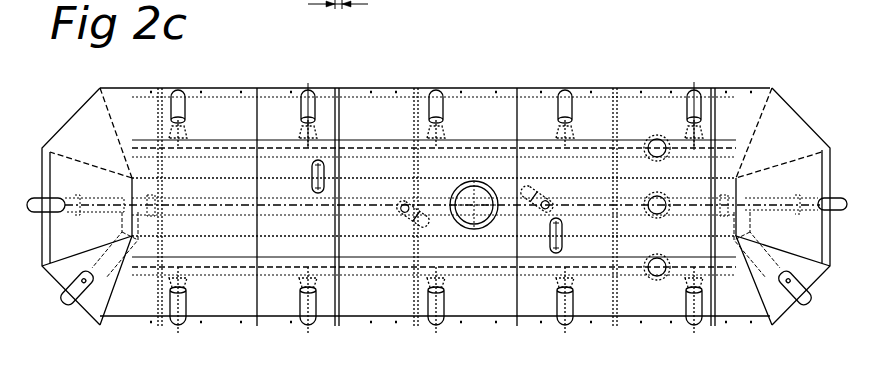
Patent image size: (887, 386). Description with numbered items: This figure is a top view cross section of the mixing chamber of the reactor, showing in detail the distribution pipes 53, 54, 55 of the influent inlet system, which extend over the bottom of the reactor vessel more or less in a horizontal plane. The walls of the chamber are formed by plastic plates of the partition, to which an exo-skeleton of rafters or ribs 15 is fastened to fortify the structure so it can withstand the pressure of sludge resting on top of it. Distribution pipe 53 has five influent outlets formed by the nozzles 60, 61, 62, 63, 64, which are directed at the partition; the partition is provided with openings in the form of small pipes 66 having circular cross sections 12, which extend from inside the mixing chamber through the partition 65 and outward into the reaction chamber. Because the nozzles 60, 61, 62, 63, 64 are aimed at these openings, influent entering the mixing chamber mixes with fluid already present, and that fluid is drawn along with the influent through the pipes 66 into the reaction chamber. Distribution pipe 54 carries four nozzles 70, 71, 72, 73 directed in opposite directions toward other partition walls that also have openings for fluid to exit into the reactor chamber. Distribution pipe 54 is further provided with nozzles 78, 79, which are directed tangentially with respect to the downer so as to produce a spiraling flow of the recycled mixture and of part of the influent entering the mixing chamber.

The rafters or ribs 15 is at (78, 118).
The partition 65 is at (133, 114).
The pipes 66 is at (182, 127).
The nozzle 60 is at (182, 127).
The circular cross sections 12 is at (307, 97).
The nozzle 61 is at (306, 132).
The nozzle 62 is at (440, 128).
The nozzle 63 is at (565, 128).
The nozzle 64 is at (693, 128).
The distribution pipe 53 is at (628, 143).
The distribution pipe 54 is at (695, 205).
The distribution pipe 55 is at (627, 270).
The nozzle 70 is at (40, 212).
The nozzle 71 is at (87, 278).
The nozzle 72 is at (790, 280).
The nozzle 73 is at (810, 207).
The nozzle 78 is at (402, 210).
The nozzle 79 is at (543, 207).